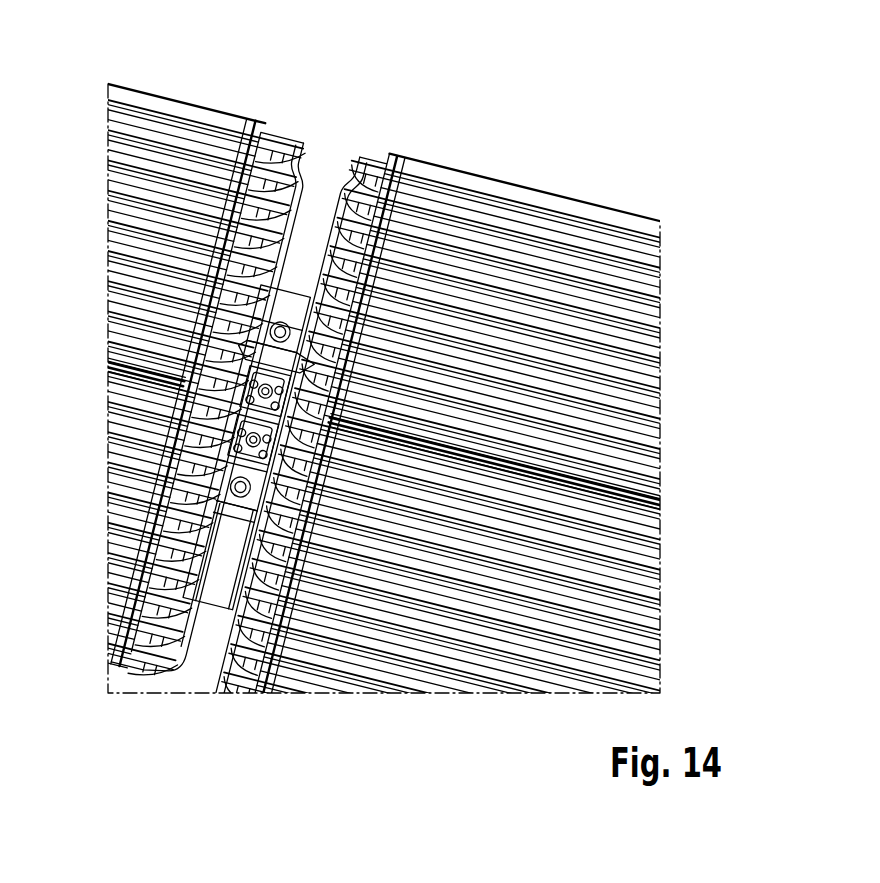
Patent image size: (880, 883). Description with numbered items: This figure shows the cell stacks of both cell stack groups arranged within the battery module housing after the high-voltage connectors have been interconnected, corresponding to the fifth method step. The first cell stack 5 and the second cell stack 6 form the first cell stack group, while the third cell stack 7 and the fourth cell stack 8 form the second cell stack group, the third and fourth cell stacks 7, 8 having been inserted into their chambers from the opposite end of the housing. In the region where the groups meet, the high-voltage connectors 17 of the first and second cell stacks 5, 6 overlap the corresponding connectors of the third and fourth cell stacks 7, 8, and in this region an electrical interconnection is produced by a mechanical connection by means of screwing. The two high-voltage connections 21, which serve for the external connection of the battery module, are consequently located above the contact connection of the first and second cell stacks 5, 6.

The first cell stack 5 is at (421, 696).
The second cell stack 6 is at (516, 476).
The third cell stack 7 is at (119, 680).
The fourth cell stack 8 is at (158, 400).
The high-voltage connector 17 is at (262, 320).
The high-voltage connection 21 is at (240, 388).